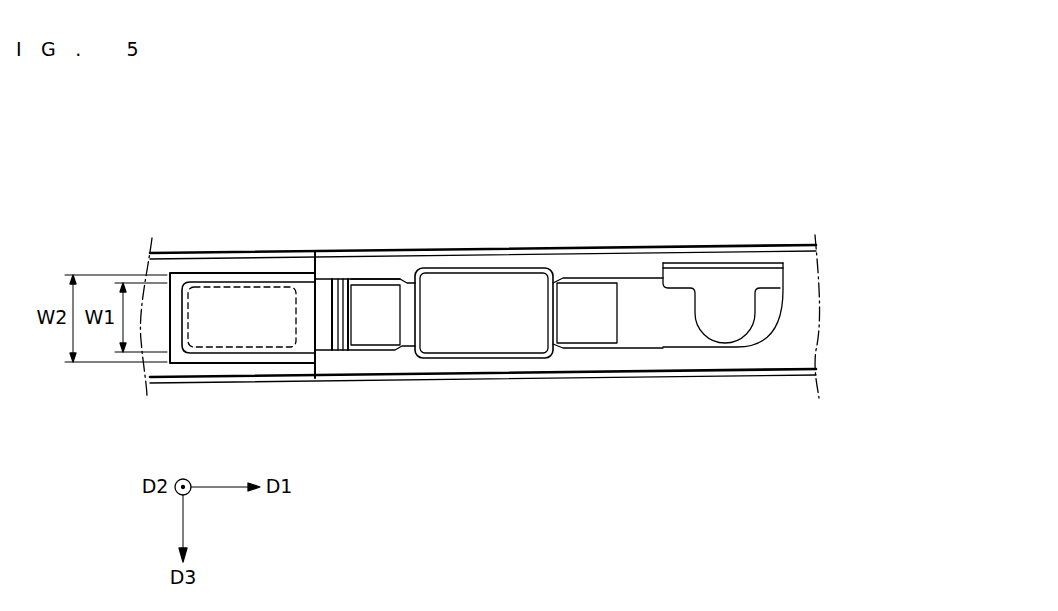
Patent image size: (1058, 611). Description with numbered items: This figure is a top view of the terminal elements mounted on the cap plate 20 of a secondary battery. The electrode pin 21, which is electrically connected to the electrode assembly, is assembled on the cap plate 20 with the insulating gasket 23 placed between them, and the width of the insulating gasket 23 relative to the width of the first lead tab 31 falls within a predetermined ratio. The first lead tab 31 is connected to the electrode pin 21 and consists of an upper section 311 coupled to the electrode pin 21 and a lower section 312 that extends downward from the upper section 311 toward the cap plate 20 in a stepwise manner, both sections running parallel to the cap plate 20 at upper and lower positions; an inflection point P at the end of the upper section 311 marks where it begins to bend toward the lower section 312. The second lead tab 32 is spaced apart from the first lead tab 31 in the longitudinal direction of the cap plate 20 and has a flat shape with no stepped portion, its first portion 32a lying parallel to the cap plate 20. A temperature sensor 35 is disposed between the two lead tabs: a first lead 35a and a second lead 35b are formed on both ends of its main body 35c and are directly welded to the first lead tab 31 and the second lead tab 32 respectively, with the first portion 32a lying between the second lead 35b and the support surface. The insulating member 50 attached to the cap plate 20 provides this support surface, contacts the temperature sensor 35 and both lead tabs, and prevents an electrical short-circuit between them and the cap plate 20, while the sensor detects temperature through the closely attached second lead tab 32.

The cap plate 20 is at (198, 369).
The electrode pin 21 is at (247, 337).
The insulating gasket 23 is at (190, 273).
The first lead tab 31 is at (325, 205).
The upper section 311 is at (276, 273).
The lower section 312 is at (375, 226).
The inflection point P is at (333, 305).
The temperature sensor 35 is at (484, 255).
The first lead 35a is at (388, 305).
The second lead 35b is at (587, 267).
The main body 35c is at (490, 293).
The second lead tab 32 is at (720, 292).
The first portion 32a is at (678, 323).
The insulating member 50 is at (366, 364).